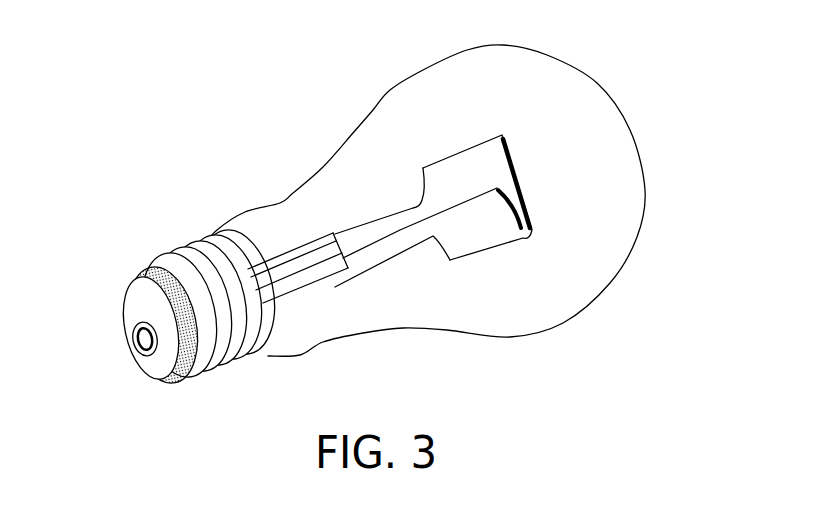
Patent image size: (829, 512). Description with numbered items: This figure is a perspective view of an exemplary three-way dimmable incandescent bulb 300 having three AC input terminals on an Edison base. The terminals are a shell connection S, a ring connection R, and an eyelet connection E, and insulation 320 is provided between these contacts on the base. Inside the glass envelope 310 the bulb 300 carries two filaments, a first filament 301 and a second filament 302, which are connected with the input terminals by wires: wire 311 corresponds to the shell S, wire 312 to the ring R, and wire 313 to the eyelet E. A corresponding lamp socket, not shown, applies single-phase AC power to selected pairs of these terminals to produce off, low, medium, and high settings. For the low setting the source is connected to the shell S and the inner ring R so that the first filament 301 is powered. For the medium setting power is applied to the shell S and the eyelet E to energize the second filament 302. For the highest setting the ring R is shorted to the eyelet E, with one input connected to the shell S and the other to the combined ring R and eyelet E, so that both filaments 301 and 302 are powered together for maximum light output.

The three-way dimmable incandescent bulb 300 is at (146, 117).
The bulb envelope 310 is at (627, 140).
The wire 311 is at (500, 192).
The wire 312 is at (383, 258).
The wire 313 is at (402, 212).
The first filament 301 is at (507, 218).
The second filament 302 is at (522, 193).
The insulation 320 is at (148, 358).
The eyelet connection E is at (283, 263).
The ring connection R is at (313, 287).
The shell connection S is at (323, 250).